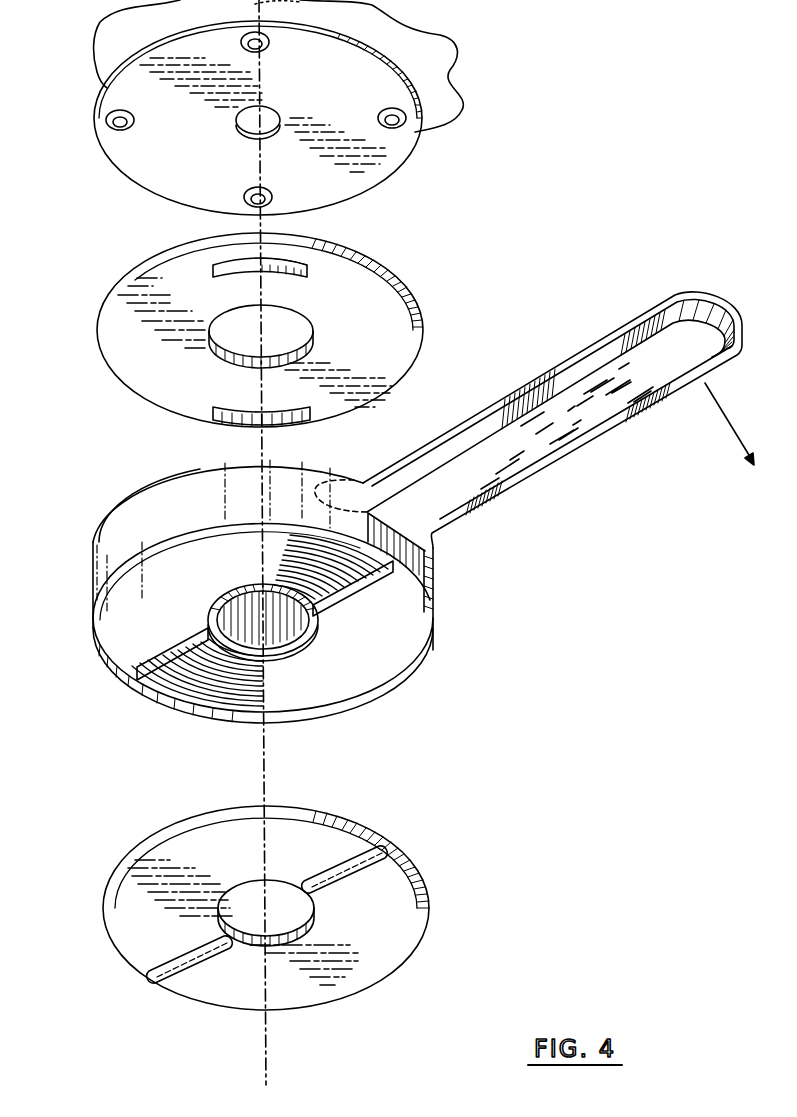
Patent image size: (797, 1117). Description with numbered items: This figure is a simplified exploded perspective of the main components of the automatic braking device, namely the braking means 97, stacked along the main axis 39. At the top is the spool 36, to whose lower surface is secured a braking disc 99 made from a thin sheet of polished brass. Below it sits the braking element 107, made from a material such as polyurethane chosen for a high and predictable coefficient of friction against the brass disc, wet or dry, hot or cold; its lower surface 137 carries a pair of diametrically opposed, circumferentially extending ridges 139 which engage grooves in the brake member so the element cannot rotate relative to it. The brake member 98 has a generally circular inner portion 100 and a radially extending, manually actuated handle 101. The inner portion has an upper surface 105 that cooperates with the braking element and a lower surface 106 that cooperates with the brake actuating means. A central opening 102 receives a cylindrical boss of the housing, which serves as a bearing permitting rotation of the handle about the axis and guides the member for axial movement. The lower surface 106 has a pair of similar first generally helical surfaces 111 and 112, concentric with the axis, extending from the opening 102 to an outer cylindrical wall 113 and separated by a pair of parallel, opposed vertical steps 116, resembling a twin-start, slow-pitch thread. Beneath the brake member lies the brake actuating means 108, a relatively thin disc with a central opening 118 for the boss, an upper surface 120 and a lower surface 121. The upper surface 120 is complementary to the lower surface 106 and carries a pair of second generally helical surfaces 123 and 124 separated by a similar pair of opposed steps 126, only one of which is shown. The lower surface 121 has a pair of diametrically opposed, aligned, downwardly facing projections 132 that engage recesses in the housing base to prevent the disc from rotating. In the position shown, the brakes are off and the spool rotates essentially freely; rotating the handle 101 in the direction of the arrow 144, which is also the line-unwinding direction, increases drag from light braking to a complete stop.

The spool 36 is at (128, 34).
The braking disc 99 is at (165, 150).
The braking element 107 is at (428, 342).
The lower surface of the braking element 137 is at (185, 353).
The ridges 139 is at (283, 268).
The upper surface 105 is at (318, 460).
The inner portion 100 is at (120, 526).
The first helical surface 112 is at (200, 550).
The outer cylindrical wall 113 is at (176, 708).
The lower surface 106 is at (328, 692).
The first helical surface 111 is at (402, 637).
The vertical steps 116 is at (190, 642).
The central opening 102 is at (292, 626).
The brake member 98 is at (442, 579).
The handle 101 is at (623, 340).
The arrow 144 is at (722, 428).
The braking means 97 is at (545, 668).
The axis 39 is at (272, 768).
The brake actuating means 108 is at (436, 908).
The upper surface 120 is at (355, 815).
The steps 126 is at (398, 848).
The central opening 118 is at (290, 915).
The second helical surface 124 is at (428, 878).
The projections 132 is at (328, 880).
The second helical surface 123 is at (215, 812).
The lower surface 121 is at (396, 962).